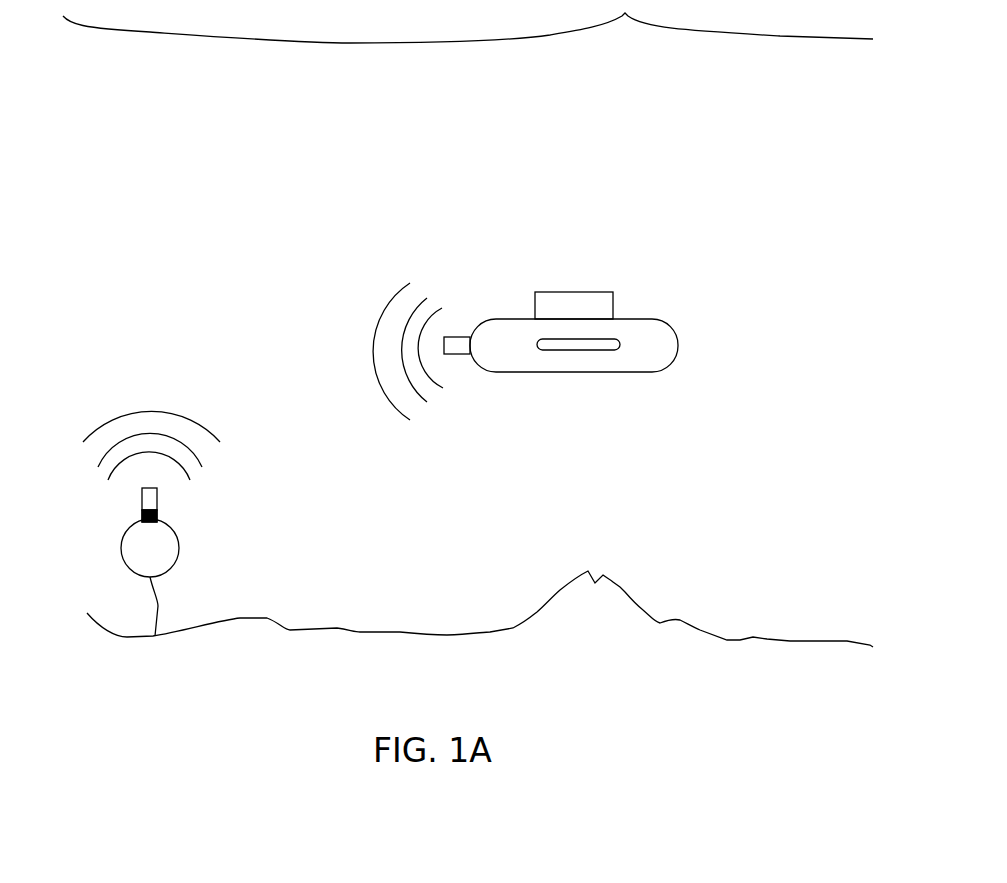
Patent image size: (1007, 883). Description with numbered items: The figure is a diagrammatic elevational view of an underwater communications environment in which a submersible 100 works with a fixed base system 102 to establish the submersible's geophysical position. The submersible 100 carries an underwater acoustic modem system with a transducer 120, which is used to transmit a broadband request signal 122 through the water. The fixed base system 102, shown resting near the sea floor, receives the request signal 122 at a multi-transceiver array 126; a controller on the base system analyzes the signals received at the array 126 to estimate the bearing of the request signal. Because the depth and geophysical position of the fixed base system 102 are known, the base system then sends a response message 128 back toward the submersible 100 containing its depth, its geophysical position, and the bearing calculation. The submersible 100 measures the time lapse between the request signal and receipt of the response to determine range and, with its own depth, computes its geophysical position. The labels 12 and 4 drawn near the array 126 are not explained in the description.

The submersible 100 is at (653, 320).
The transducer 120 is at (460, 337).
The request signal 122 is at (387, 320).
The response message 128 is at (165, 413).
The fixed base system 102 is at (144, 553).
The transmitter/tag 12 is at (153, 495).
The multi-transceiver array 126 is at (157, 517).
The sensor element 4 is at (199, 516).